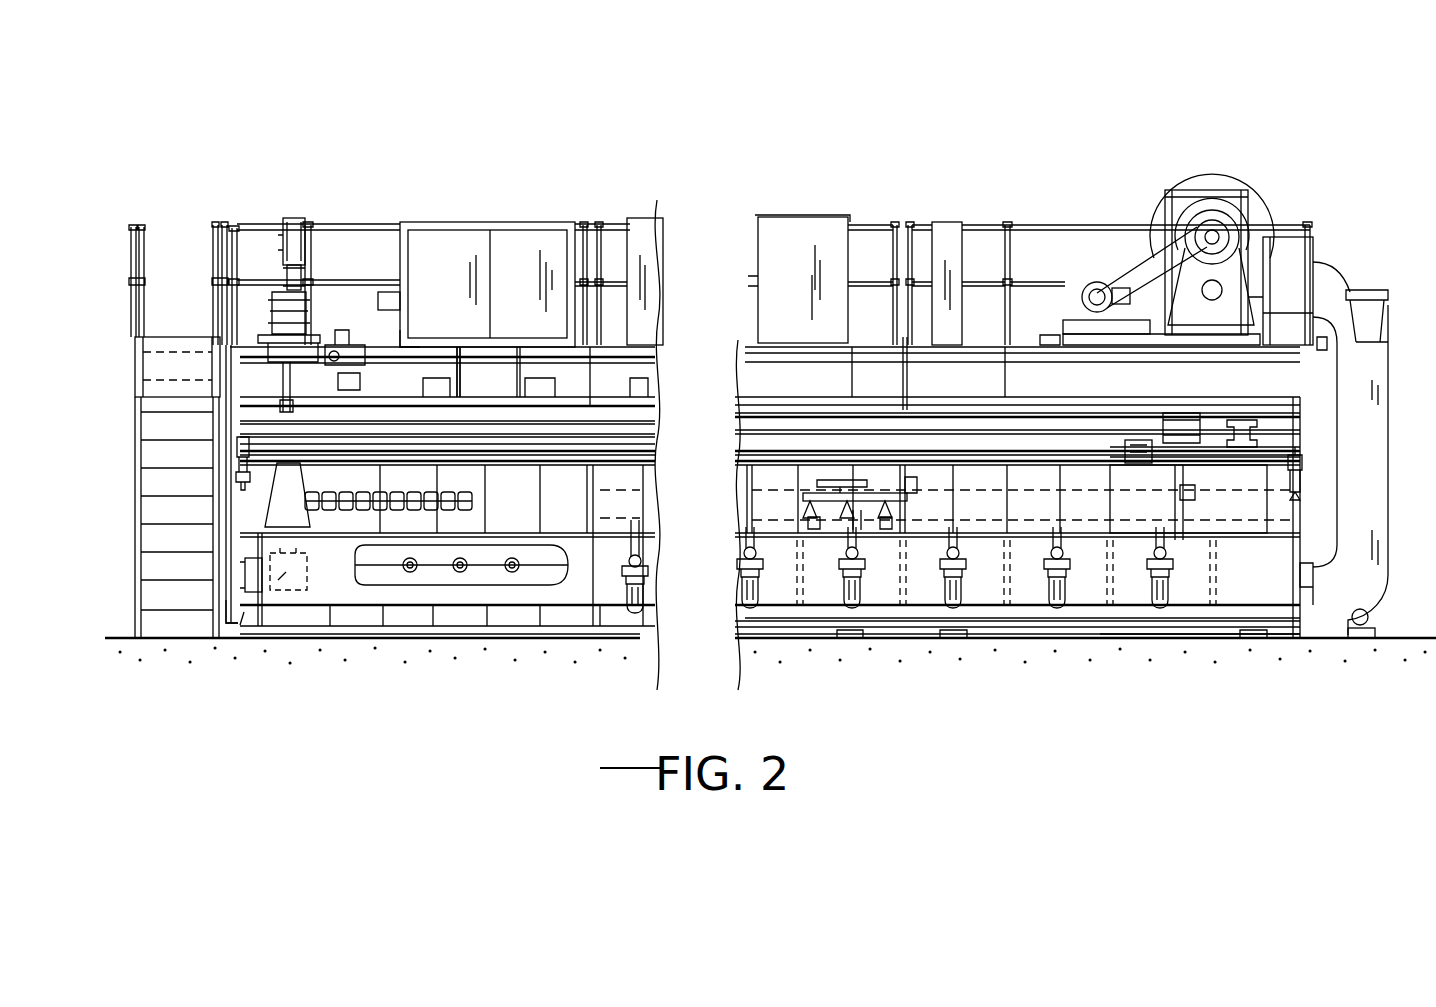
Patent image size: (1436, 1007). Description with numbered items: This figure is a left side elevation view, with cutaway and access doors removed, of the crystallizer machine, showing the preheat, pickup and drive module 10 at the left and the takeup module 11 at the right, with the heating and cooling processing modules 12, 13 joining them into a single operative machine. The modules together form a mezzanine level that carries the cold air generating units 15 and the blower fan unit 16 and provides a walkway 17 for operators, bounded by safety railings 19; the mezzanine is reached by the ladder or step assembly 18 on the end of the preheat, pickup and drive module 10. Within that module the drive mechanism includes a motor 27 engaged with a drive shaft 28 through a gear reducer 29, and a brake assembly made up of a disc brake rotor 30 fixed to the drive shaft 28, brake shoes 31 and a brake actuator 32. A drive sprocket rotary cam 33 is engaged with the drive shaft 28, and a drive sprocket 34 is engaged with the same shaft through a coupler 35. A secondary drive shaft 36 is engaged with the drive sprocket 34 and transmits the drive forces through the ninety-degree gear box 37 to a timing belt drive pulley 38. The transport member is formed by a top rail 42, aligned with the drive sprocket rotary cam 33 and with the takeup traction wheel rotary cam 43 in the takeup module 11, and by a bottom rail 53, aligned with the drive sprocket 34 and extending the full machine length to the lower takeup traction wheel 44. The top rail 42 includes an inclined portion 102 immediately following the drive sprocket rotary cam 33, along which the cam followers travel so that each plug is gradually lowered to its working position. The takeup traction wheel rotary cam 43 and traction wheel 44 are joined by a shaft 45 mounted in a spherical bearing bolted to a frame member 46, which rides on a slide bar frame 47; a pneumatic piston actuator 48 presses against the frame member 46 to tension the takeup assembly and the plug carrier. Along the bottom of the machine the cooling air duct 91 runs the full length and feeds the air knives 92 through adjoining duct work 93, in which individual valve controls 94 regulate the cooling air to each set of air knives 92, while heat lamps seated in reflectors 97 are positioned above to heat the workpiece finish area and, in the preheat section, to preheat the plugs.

The preheat, pickup and drive module 10 is at (403, 675).
The takeup module 11 is at (1157, 665).
The heating and cooling processing module 12 is at (606, 670).
The heating and cooling processing module 13 is at (898, 662).
The cold air generating unit 15 is at (641, 232).
The blower fan unit 16 is at (1222, 195).
The walkway 17 is at (370, 336).
The ladder or step assembly 18 is at (170, 616).
The safety railings 19 is at (364, 224).
The motor 27 is at (289, 250).
The drive shaft 28 is at (287, 278).
The gear reducer 29 is at (272, 316).
The disc brake rotor 30 is at (290, 402).
The brake shoes 31 is at (406, 339).
The brake actuator 32 is at (398, 297).
The drive sprocket rotary cam 33 is at (240, 410).
The drive sprocket 34 is at (240, 485).
The coupler 35 is at (258, 438).
The secondary drive shaft 36 is at (285, 502).
The 90° gear box 37 is at (236, 640).
The timing belt drive pulley 38 is at (248, 571).
The top rail 42 is at (753, 428).
The takeup traction wheel rotary cam 43 is at (1295, 427).
The lower takeup traction wheel 44 is at (1290, 470).
The shaft 45 is at (1258, 442).
The frame member 46 is at (1223, 473).
The slide bar frame 47 is at (1183, 483).
The pneumatic piston actuator 48 is at (1143, 442).
The bottom rail 53 is at (458, 400).
The cooling air duct 91 is at (1327, 612).
The air knives 92 is at (815, 500).
The duct work 93 is at (832, 560).
The valve controls 94 is at (1012, 562).
The reflectors 97 is at (870, 478).
The inclined portion 102 is at (398, 378).